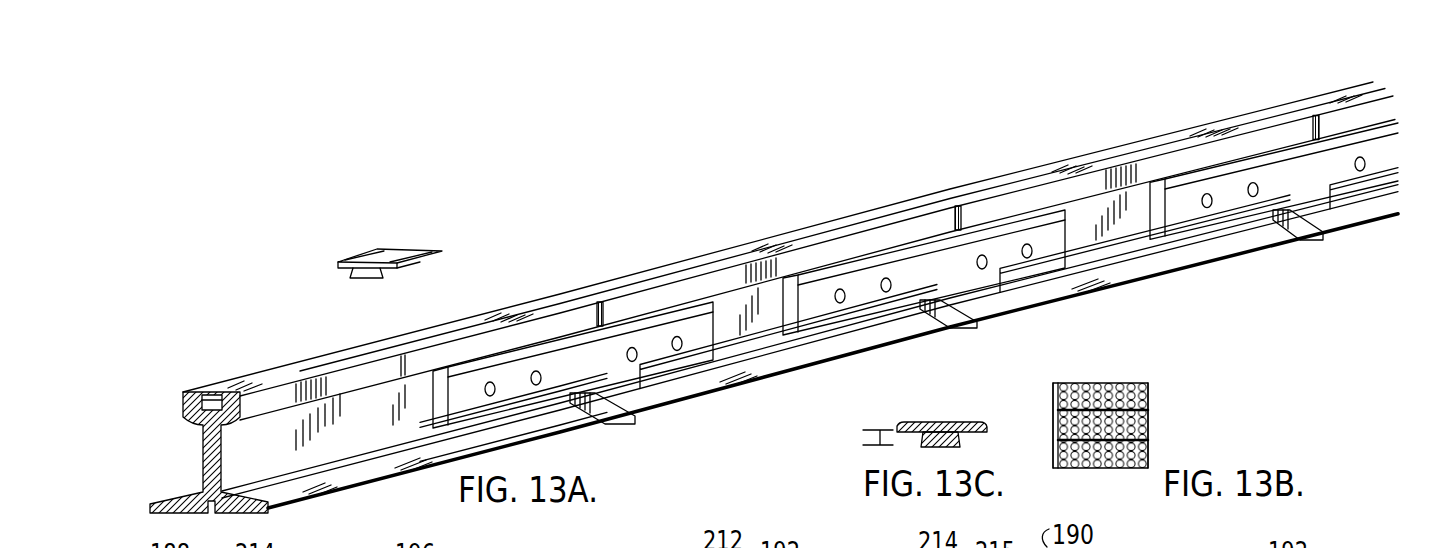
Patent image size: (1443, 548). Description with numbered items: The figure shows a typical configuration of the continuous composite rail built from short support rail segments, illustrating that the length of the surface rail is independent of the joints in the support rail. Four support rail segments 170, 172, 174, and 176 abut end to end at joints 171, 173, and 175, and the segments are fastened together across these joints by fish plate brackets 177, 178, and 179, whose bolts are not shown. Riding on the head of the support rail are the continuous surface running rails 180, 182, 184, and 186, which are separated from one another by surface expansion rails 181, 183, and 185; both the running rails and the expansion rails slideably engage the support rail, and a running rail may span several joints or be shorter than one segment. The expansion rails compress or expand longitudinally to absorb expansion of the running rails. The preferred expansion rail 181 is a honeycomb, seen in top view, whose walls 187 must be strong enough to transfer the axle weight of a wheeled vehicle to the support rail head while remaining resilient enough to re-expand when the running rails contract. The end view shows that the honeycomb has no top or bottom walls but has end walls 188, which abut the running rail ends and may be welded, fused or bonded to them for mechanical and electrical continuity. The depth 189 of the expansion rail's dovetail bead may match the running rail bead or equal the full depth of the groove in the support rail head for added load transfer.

In FIG. 13A, the support rail segment 170 is at (530, 426).
In FIG. 13A, the joint 171 is at (607, 402).
In FIG. 13A, the support rail segment 172 is at (777, 359).
In FIG. 13A, the joint 173 is at (985, 322).
In FIG. 13A, the support rail segment 174 is at (1073, 282).
In FIG. 13A, the joint 175 is at (1320, 237).
In FIG. 13A, the support rail segment 176 is at (1369, 206).
In FIG. 13A, the fish plate bracket 177 is at (697, 327).
In FIG. 13A, the fish plate bracket 178 is at (918, 272).
In FIG. 13A, the fish plate bracket 179 is at (1248, 192).
In FIG. 13A, the surface running rail 180 is at (297, 370).
In FIG. 13A, the expansion rail 181 is at (420, 343).
In FIG. 13A, the surface running rail 182 is at (618, 287).
In FIG. 13A, the expansion rail 183 is at (1020, 175).
In FIG. 13A, the surface running rail 184 is at (1114, 158).
In FIG. 13A, the expansion rail 185 is at (1236, 124).
In FIG. 13A, the surface running rail 186 is at (1324, 100).
In FIG. 13B, the honeycomb walls 187 is at (1112, 390).
In FIG. 13B, the end walls 188 is at (1053, 404).
In FIG. 13C, the depth of dovetail bead 189 is at (863, 432).